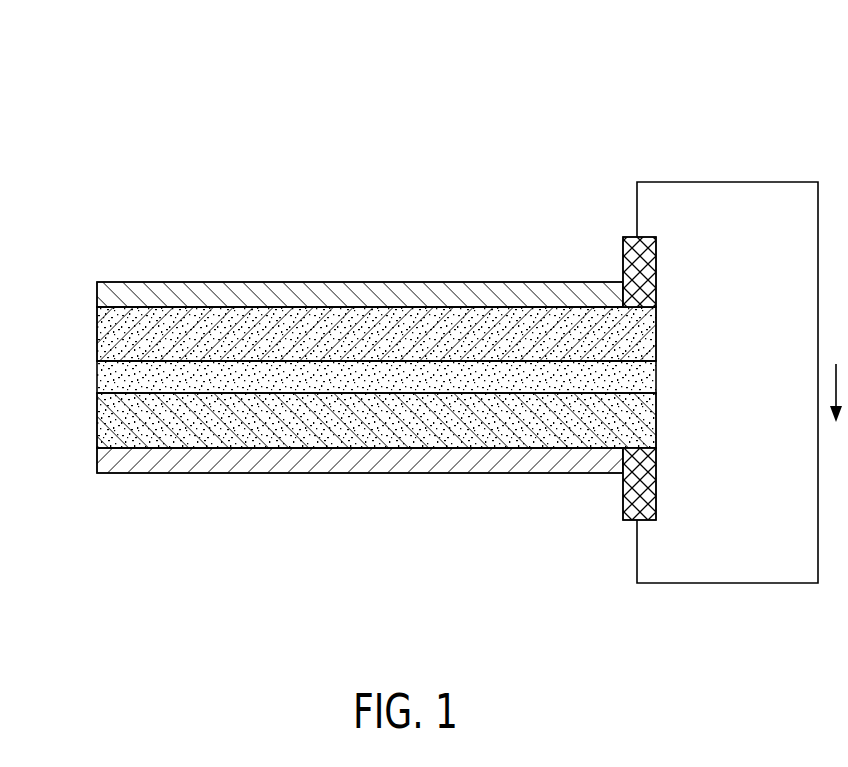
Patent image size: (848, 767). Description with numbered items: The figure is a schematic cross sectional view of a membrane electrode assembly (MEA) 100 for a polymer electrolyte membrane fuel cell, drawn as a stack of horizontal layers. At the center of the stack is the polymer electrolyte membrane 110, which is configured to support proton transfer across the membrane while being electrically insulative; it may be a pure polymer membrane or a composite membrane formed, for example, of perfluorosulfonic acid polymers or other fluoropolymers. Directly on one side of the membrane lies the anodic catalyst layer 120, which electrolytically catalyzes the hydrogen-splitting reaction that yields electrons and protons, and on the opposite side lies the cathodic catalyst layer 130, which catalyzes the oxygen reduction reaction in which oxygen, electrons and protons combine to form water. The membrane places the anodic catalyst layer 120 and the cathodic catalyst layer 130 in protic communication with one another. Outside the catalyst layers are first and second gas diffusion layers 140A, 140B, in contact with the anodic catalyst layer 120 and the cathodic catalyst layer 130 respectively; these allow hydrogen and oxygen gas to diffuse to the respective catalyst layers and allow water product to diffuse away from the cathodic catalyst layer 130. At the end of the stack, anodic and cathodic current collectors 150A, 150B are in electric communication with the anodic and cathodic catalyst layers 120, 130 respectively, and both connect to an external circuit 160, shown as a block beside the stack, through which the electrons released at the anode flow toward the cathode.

The membrane electrode assembly 100 is at (90, 92).
The polymer electrolyte membrane 110 is at (97, 378).
The anodic catalyst layer 120 is at (97, 333).
The cathodic catalyst layer 130 is at (97, 421).
The first gas diffusion layer 140A is at (135, 293).
The second gas diffusion layer 140B is at (135, 462).
The anodic current collector 150A is at (627, 237).
The cathodic current collector 150B is at (630, 520).
The external circuit 160 is at (727, 181).